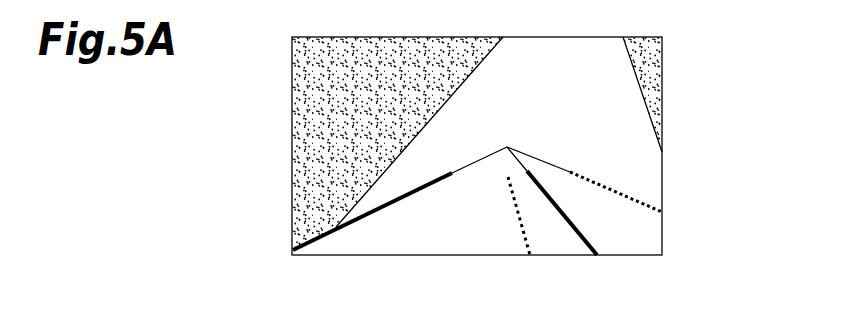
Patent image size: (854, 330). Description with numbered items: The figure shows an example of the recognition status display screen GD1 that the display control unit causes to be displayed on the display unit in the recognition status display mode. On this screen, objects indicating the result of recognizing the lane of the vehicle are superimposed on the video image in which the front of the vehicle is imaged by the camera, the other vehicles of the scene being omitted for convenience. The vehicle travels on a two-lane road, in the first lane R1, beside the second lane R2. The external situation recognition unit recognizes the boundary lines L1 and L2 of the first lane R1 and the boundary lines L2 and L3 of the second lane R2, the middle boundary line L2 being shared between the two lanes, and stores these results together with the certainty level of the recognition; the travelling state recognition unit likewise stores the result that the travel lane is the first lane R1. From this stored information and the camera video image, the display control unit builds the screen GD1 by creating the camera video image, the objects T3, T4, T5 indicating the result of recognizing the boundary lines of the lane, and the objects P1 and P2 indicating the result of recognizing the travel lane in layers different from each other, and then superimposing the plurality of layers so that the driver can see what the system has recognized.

The recognition status display screen GD1 is at (670, 57).
The object indicating travel lane recognition result P1 is at (307, 95).
The object indicating travel lane recognition result P2 is at (655, 85).
The boundary line L1 is at (401, 165).
The boundary line L2 is at (544, 182).
The boundary line L3 is at (584, 155).
The object indicating boundary line recognition result T3 is at (423, 182).
The object indicating boundary line recognition result T4 is at (540, 238).
The object indicating boundary line recognition result T5 is at (615, 180).
The first lane R1 is at (463, 240).
The second lane R2 is at (645, 232).